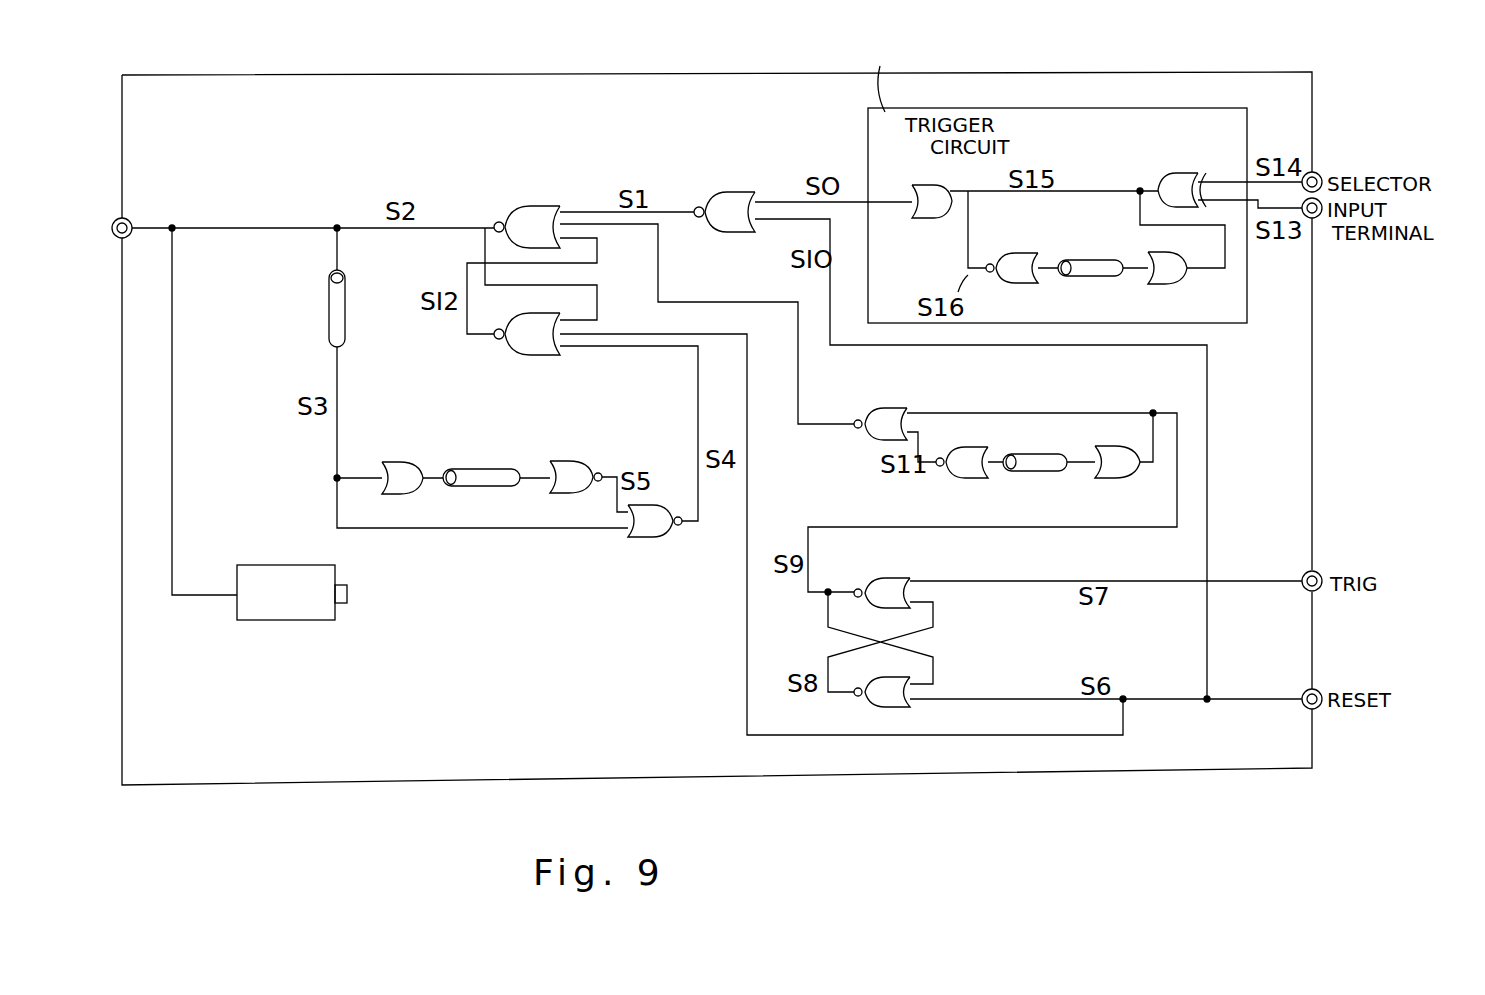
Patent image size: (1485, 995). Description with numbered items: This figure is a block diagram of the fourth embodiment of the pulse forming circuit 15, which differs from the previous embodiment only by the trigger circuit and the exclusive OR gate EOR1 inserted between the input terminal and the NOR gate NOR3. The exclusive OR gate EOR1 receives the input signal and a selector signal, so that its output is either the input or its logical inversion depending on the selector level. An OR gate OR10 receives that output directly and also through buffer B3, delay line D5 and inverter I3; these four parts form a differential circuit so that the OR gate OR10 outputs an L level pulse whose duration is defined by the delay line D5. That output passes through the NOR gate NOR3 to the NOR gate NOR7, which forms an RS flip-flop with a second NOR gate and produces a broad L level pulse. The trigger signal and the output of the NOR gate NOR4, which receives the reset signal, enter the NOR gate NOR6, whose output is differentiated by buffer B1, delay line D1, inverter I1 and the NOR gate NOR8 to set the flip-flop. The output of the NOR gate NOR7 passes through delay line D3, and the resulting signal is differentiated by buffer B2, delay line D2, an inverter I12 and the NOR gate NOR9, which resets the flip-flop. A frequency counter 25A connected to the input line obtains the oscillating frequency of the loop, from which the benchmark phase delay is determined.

The pulse forming circuit 15 is at (1104, 73).
The frequency counter 25A is at (262, 565).
The NOR gate NOR7 is at (532, 206).
The NOR gate NOR3 is at (730, 192).
The NOR gate NOR8 is at (886, 408).
The NOR gate NOR9 is at (650, 537).
The NOR gate NOR6 is at (890, 578).
The NOR gate NOR4 is at (886, 707).
The delay line D3 is at (329, 310).
The delay line D2 is at (485, 486).
The delay line D1 is at (1045, 471).
The delay line D5 is at (1090, 276).
The buffer B2 is at (405, 462).
The buffer B1 is at (1125, 478).
The buffer B3 is at (1180, 284).
The inverter I12 is at (578, 461).
The inverter I1 is at (955, 478).
The inverter I3 is at (1015, 253).
The OR gate OR10 is at (933, 218).
The exclusive OR gate EOR1 is at (1182, 173).